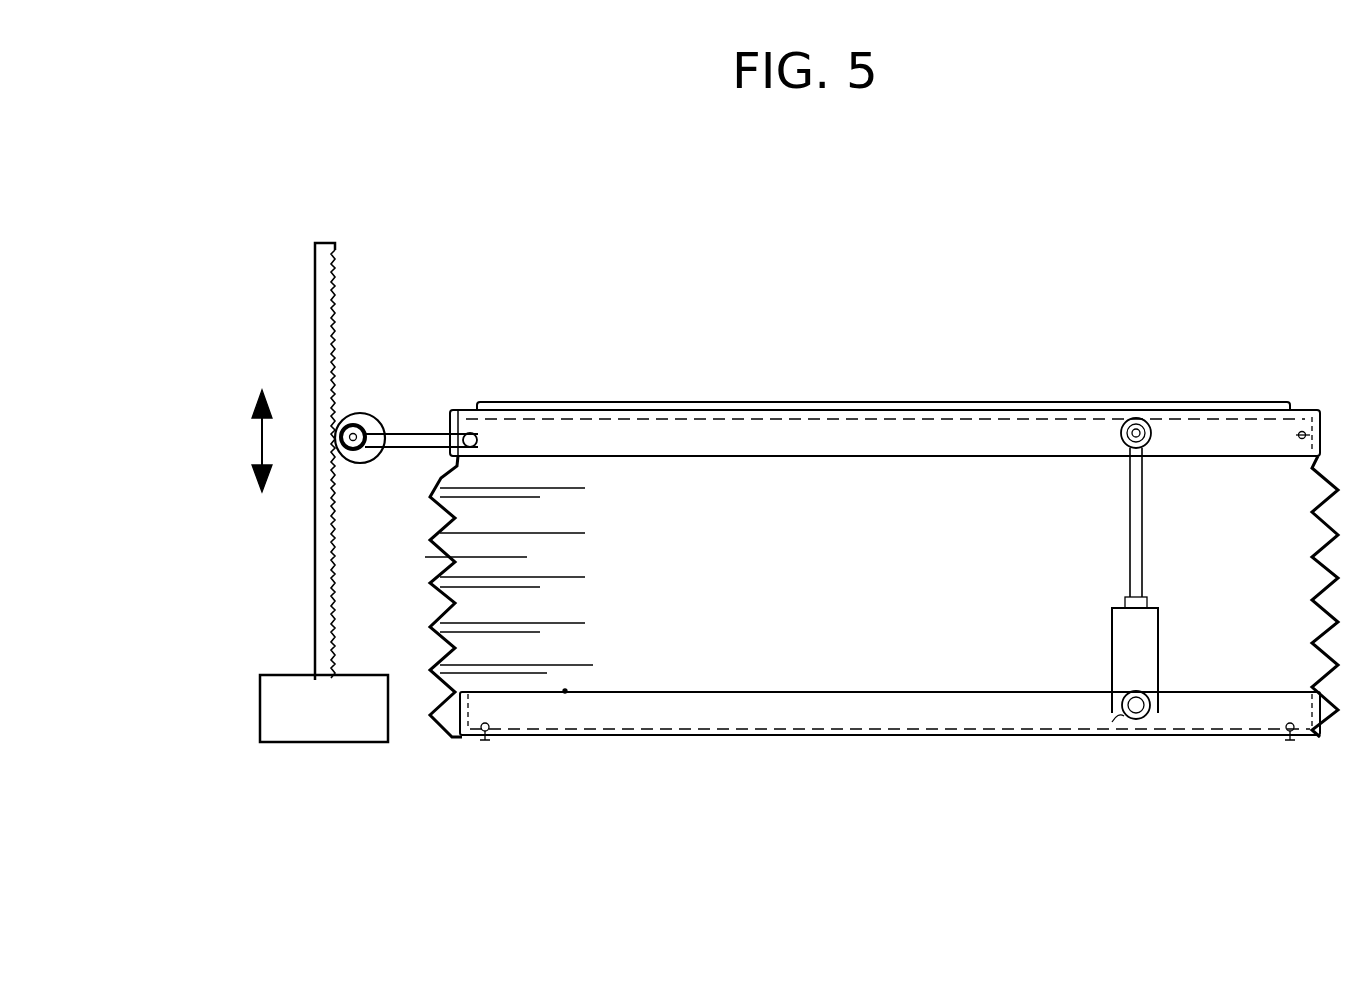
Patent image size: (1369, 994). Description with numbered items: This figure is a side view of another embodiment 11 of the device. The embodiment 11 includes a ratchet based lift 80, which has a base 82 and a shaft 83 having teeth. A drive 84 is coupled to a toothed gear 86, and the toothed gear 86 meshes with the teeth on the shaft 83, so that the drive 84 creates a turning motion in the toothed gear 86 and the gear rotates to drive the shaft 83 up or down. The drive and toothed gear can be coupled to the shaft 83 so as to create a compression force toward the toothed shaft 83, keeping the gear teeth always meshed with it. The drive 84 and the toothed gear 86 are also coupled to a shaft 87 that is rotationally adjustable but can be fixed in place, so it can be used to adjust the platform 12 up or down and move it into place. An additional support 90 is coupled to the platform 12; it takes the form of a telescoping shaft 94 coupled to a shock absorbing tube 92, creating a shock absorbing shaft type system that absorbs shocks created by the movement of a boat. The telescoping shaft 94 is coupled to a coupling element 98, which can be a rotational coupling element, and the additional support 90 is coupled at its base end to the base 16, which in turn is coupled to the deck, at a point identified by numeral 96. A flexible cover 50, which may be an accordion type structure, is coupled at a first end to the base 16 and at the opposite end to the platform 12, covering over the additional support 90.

The embodiment 11 is at (703, 285).
The platform 12 is at (615, 405).
The base 16 is at (693, 707).
The flexible cover 50 is at (458, 522).
The ratchet based lift 80 is at (320, 320).
The base 82 is at (343, 722).
The shaft 83 is at (337, 252).
The drive 84 is at (378, 420).
The toothed gear 86 is at (353, 437).
The shaft 87 is at (407, 445).
The additional support 90 is at (1133, 768).
The shock absorbing tube 92 is at (1125, 635).
The telescoping shaft 94 is at (1130, 525).
The lower pivot bolt 96 is at (1140, 705).
The coupling element 98 is at (1127, 420).